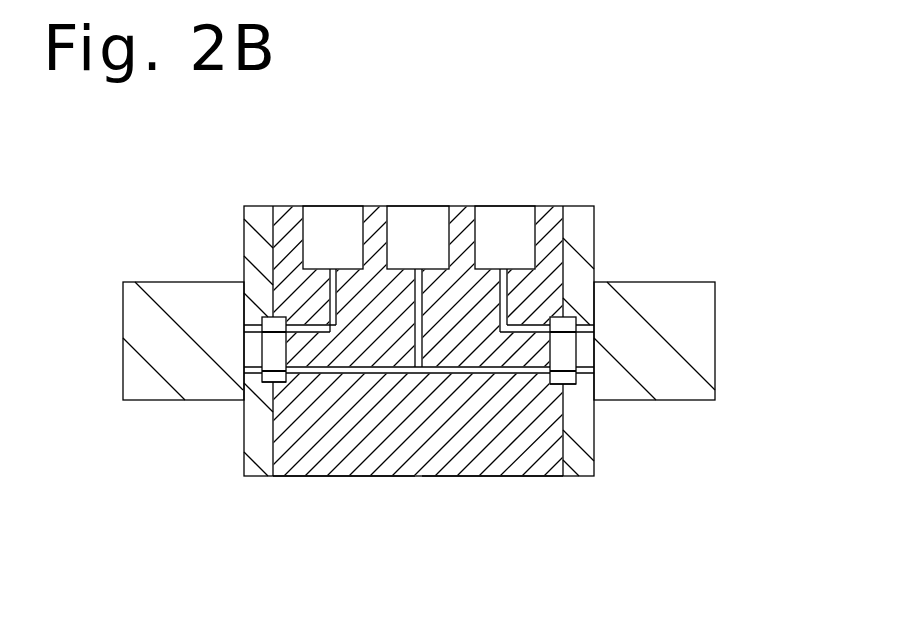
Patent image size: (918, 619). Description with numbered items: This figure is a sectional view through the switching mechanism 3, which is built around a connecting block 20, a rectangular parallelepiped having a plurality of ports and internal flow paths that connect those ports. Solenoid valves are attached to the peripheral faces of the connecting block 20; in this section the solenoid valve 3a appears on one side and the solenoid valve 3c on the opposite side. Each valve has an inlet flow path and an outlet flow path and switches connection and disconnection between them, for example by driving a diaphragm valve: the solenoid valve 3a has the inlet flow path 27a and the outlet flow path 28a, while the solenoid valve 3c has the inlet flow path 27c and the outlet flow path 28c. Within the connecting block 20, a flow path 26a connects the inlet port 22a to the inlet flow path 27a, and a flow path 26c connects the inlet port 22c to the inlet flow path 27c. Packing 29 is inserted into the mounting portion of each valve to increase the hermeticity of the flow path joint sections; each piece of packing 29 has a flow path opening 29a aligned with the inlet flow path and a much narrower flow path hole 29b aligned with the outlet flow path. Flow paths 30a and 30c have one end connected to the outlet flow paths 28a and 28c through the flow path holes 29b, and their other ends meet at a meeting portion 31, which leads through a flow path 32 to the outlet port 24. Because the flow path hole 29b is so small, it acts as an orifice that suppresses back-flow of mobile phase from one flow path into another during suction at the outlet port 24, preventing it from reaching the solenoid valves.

The switching mechanism 3 is at (658, 167).
The solenoid valve 3a is at (715, 282).
The solenoid valve 3c is at (123, 282).
The connecting block 20 is at (530, 438).
The inlet port 22a is at (504, 220).
The inlet port 22c is at (327, 220).
The outlet port 24 is at (418, 220).
The flow path 26a is at (505, 300).
The flow path 26c is at (330, 292).
The inlet flow path 27a is at (589, 326).
The inlet flow path 27c is at (262, 330).
The outlet flow path 28a is at (578, 375).
The outlet flow path 28c is at (257, 374).
The packing 29 is at (583, 332).
The flow path opening 29a is at (585, 372).
The flow path hole 29b is at (568, 386).
The flow path 30a is at (482, 373).
The flow path 30c is at (352, 371).
The meeting portion 31 is at (420, 373).
The flow path 32 is at (400, 318).